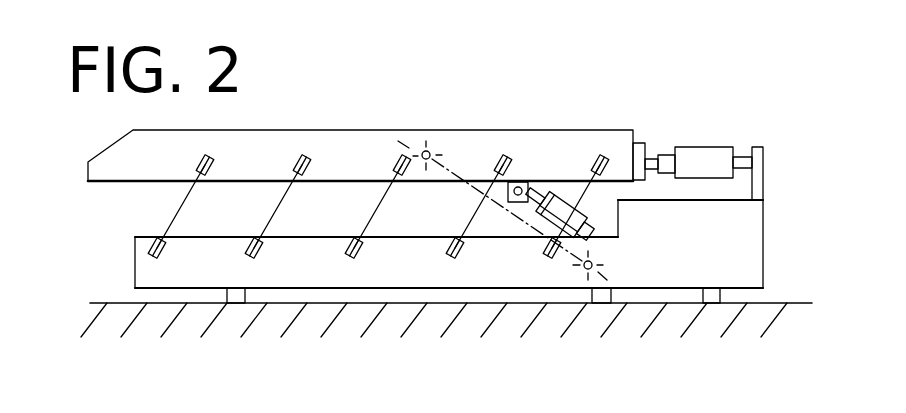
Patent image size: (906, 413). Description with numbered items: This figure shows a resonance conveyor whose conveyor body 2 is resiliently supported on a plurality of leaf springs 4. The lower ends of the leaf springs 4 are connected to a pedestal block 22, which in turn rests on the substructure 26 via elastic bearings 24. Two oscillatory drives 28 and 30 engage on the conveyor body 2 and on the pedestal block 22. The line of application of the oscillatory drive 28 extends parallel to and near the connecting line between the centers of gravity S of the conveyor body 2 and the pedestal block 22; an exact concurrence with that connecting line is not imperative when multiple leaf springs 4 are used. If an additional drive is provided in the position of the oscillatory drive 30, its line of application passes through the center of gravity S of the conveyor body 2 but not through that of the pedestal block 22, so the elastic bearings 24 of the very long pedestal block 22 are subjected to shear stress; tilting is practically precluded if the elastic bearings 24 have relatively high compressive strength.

The conveyor body 2 is at (348, 142).
The leaf springs 4 is at (180, 208).
The pedestal block 22 is at (748, 248).
The elastic bearings 24 is at (236, 300).
The substructure 26 is at (397, 315).
The oscillatory drive 28 is at (553, 203).
The oscillatory drive 30 is at (692, 155).
The center of gravity S is at (511, 210).